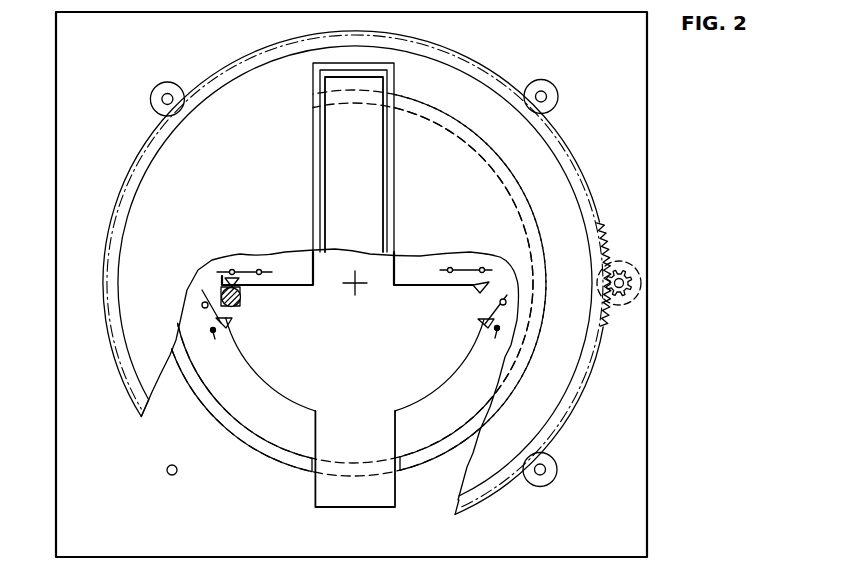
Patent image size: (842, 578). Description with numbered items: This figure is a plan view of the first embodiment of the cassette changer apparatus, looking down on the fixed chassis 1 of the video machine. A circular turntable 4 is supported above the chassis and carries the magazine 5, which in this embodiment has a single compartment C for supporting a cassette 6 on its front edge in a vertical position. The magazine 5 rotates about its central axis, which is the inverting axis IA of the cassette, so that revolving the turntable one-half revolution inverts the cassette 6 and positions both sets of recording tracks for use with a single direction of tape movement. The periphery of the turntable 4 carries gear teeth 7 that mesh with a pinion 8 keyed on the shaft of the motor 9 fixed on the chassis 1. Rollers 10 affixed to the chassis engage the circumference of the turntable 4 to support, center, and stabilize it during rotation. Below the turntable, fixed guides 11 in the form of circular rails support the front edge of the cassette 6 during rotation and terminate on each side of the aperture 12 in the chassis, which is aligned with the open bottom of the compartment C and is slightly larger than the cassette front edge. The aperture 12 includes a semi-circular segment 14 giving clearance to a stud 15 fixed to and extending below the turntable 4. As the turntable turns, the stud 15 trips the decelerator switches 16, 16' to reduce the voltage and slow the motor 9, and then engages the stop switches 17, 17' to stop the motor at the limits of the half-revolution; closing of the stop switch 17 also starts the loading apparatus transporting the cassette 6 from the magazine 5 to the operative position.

The fixed chassis 1 is at (643, 93).
The circular turntable 4 is at (462, 90).
The magazine 5 is at (399, 185).
The cassette 6 is at (367, 166).
The compartment C is at (388, 205).
The gear teeth 7 is at (610, 238).
The pinion 8 is at (631, 273).
The motor 9 is at (642, 304).
The rollers 10 is at (163, 99).
The guides 11 is at (225, 418).
The aperture 12 is at (318, 439).
The semi-circular segment 14 is at (285, 391).
The stud 15 is at (241, 300).
The decelerator switch 16 is at (240, 329).
The decelerator switch 16' is at (465, 329).
The stop switch 17 is at (244, 250).
The stop switch 17' is at (469, 257).
The inverting axis IA is at (365, 290).